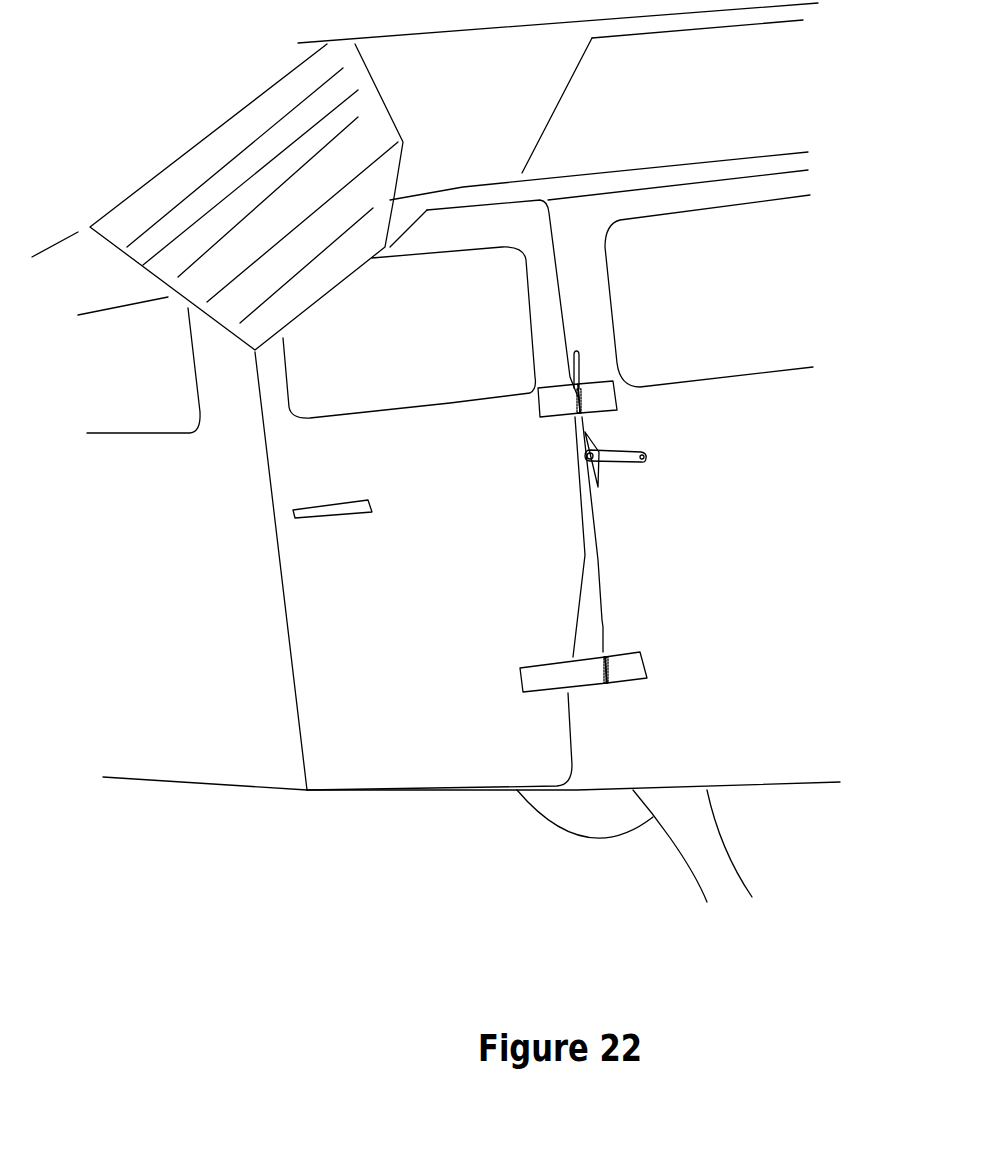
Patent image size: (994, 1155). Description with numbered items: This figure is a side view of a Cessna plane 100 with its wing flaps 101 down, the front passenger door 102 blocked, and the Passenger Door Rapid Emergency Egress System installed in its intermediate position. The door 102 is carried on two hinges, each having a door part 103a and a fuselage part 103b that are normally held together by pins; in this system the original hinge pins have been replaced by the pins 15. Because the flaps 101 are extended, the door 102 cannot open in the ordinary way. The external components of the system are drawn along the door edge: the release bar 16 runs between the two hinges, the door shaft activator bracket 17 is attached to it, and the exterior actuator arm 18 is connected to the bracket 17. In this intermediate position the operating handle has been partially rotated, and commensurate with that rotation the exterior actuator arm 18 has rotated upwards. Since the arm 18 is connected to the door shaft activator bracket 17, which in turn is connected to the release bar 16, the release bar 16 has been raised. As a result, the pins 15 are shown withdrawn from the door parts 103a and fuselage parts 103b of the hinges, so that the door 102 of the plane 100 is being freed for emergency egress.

The plane 100 is at (436, 470).
The wing flaps 101 is at (230, 328).
The passenger door 102 is at (422, 752).
The door part 103a is at (567, 415).
The fuselage part 103b is at (605, 397).
The pins 15 is at (573, 363).
The release bar 16 is at (600, 605).
The door shaft activator bracket 17 is at (597, 480).
The exterior actuator arm 18 is at (620, 460).